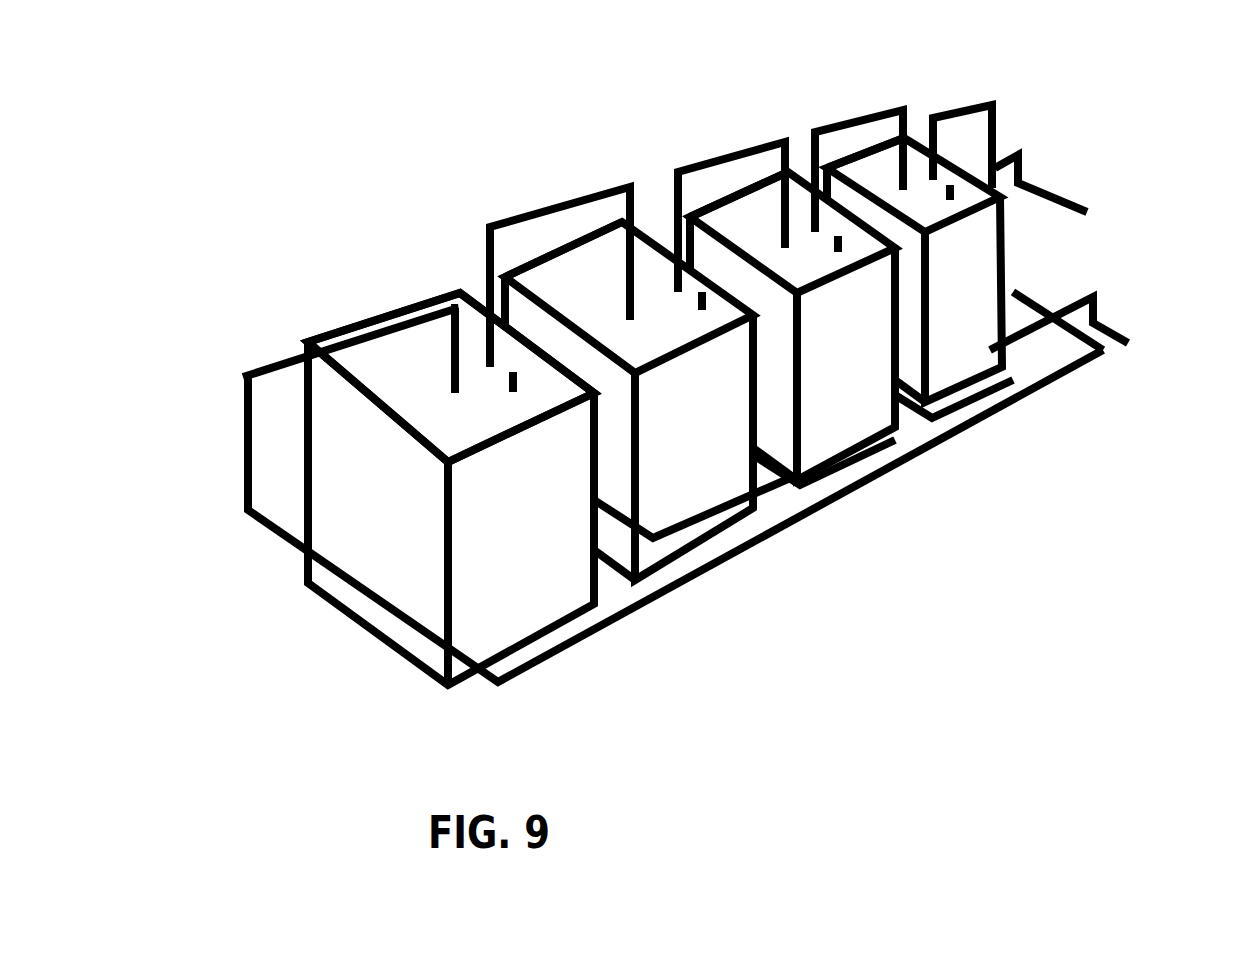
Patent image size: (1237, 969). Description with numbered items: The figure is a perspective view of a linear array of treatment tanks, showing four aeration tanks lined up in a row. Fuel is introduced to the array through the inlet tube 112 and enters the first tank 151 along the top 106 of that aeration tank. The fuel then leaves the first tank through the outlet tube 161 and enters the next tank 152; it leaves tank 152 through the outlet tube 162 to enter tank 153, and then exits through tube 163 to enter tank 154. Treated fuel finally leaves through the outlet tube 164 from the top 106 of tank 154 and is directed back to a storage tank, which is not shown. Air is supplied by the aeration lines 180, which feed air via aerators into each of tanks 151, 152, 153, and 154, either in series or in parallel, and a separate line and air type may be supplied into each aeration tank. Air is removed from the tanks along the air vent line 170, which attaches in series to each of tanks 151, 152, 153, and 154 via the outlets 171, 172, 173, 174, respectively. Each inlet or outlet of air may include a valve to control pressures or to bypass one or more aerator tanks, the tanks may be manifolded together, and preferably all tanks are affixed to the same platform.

The top 106 is at (429, 392).
The inlet tube 112 is at (247, 493).
The first tank 151 is at (332, 335).
The tank 152 is at (560, 270).
The tank 153 is at (752, 210).
The tank 154 is at (877, 155).
The outlet tube 161 is at (490, 274).
The outlet tube 162 is at (675, 172).
The tube 163 is at (813, 128).
The outlet tube 164 is at (958, 103).
The air vent line 170 is at (1087, 212).
The outlet 171 is at (451, 489).
The outlet 172 is at (692, 318).
The outlet 173 is at (792, 326).
The outlet 174 is at (914, 270).
The aeration lines 180 is at (693, 523).